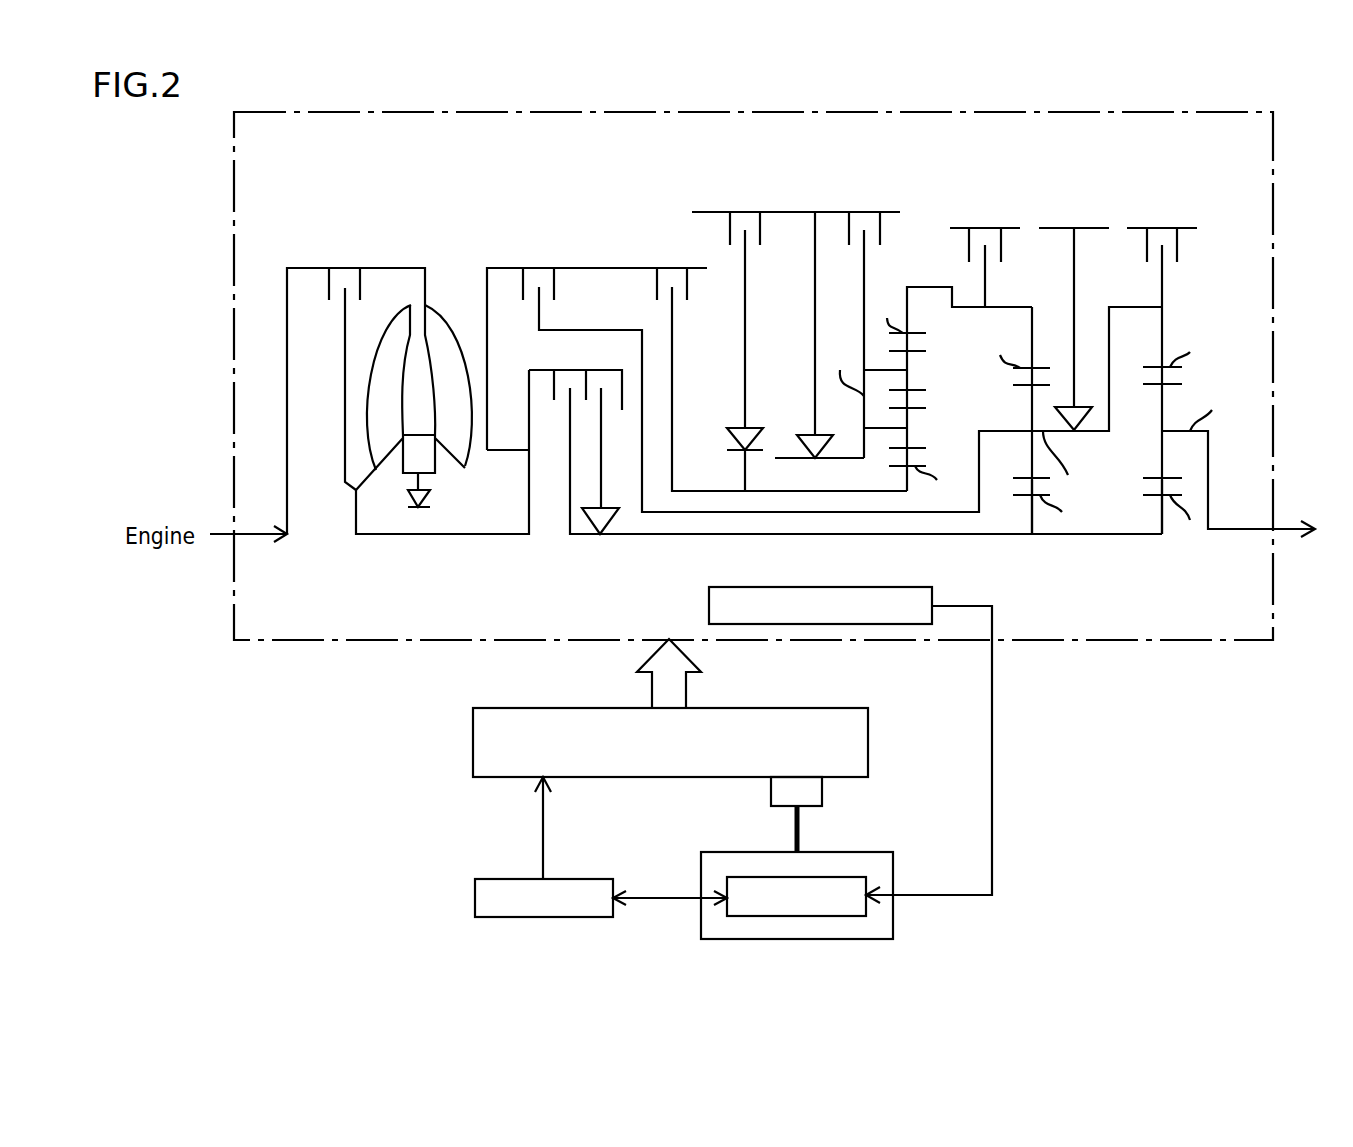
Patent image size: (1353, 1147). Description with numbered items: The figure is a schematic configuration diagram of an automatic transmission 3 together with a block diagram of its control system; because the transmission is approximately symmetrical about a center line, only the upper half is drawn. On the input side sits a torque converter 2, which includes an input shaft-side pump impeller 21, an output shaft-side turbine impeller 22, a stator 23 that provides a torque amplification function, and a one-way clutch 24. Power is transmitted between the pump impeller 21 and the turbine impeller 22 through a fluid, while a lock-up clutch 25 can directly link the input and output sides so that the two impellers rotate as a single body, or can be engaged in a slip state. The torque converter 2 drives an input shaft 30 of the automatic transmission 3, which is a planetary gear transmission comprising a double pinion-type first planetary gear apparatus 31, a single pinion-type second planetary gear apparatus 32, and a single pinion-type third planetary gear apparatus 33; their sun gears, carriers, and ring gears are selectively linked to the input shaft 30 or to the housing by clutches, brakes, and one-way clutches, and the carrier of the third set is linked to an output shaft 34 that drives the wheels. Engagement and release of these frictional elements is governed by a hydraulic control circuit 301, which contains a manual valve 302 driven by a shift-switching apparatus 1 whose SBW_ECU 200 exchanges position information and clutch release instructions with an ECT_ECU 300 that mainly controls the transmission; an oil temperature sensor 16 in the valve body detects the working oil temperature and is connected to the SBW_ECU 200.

The shift-switching apparatus 1 is at (812, 872).
The torque converter 2 is at (404, 351).
The automatic transmission 3 is at (904, 190).
The oil temperature sensor 16 is at (910, 587).
The pump impeller 21 is at (463, 450).
The turbine impeller 22 is at (367, 400).
The stator 23 is at (408, 460).
The one-way clutch 24 is at (430, 500).
The lock-up clutch 25 is at (337, 296).
The input shaft 30 is at (478, 540).
The first planetary gear apparatus 31 is at (894, 508).
The second planetary gear apparatus 32 is at (1041, 551).
The third planetary gear apparatus 33 is at (1164, 560).
The output shaft 34 is at (1228, 526).
The SBW_ECU 200 is at (735, 877).
The ECT_ECU 300 is at (475, 900).
The hydraulic control circuit 301 is at (473, 745).
The manual valve 302 is at (822, 792).